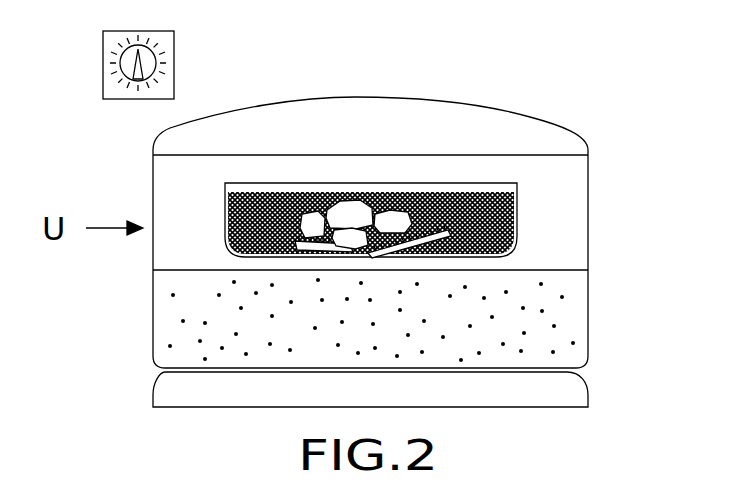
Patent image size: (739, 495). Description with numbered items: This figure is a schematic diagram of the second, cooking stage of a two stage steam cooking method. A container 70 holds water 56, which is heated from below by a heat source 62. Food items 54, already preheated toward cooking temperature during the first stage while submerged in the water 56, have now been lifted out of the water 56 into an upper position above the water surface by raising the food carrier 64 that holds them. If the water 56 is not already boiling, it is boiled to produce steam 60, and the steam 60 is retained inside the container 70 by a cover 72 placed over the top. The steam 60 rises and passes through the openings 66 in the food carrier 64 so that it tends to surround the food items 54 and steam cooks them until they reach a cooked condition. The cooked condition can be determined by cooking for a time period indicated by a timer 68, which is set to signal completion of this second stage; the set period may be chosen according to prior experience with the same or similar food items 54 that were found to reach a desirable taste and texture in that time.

The food items 54 is at (350, 217).
The water 56 is at (568, 307).
The steam 60 is at (573, 177).
The heat source 62 is at (588, 390).
The food carrier 64 is at (257, 183).
The openings 66 is at (428, 200).
The timer 68 is at (165, 58).
The container 70 is at (588, 223).
The cover 72 is at (507, 107).